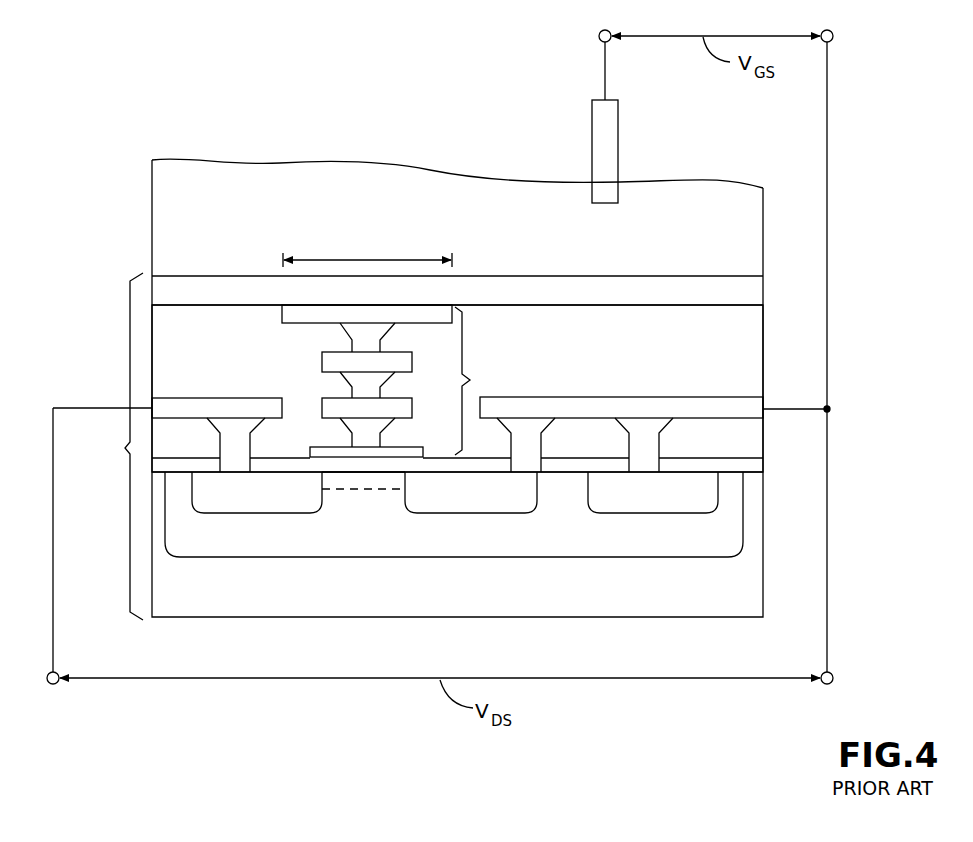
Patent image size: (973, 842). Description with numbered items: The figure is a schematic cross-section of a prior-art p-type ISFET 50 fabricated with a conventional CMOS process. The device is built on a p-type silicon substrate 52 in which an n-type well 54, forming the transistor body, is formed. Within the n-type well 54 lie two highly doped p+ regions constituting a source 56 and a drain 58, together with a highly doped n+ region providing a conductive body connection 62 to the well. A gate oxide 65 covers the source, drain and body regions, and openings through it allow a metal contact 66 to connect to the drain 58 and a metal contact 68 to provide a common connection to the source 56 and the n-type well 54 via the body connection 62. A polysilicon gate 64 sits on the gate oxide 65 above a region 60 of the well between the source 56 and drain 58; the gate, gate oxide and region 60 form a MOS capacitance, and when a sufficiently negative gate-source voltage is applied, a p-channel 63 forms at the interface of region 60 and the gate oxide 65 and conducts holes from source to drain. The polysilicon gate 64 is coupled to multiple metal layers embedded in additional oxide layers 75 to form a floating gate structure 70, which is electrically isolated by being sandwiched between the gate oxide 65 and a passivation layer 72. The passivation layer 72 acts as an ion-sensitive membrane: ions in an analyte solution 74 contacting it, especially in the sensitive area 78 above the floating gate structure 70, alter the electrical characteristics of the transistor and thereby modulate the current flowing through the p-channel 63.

The p-type ISFET 50 is at (125, 448).
The p-type silicon substrate 52 is at (618, 618).
The n-type well 54 is at (293, 556).
The source 56 is at (500, 503).
The drain 58 is at (238, 515).
The region of the n-type well 60 is at (392, 497).
The body connection 62 is at (653, 513).
The p-channel 63 is at (355, 482).
The polysilicon gate 64 is at (400, 447).
The gate oxide 65 is at (322, 470).
The metal contact 66 is at (218, 398).
The metal contact 68 is at (652, 398).
The floating gate structure 70 is at (470, 380).
The passivation layer 72 is at (250, 276).
The analyte solution 74 is at (253, 178).
The additional oxide layers 75 is at (608, 345).
The sensitive area 78 is at (378, 225).